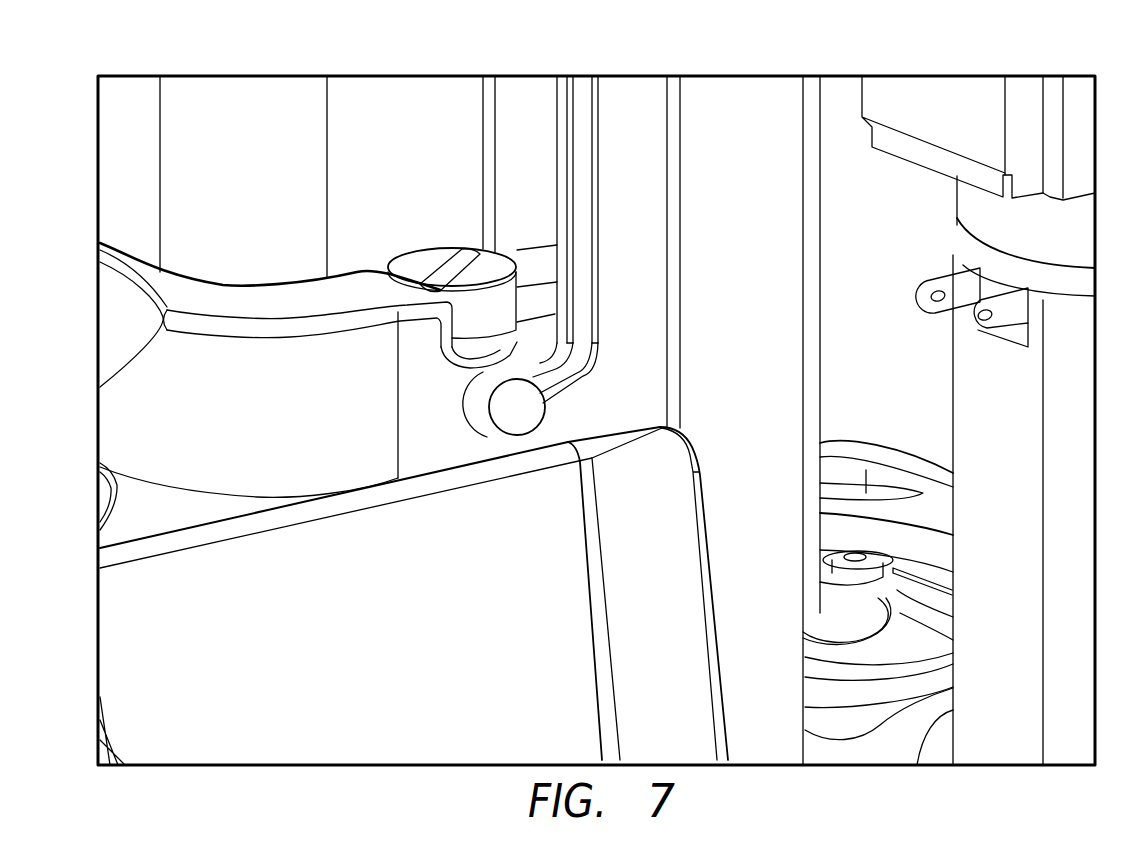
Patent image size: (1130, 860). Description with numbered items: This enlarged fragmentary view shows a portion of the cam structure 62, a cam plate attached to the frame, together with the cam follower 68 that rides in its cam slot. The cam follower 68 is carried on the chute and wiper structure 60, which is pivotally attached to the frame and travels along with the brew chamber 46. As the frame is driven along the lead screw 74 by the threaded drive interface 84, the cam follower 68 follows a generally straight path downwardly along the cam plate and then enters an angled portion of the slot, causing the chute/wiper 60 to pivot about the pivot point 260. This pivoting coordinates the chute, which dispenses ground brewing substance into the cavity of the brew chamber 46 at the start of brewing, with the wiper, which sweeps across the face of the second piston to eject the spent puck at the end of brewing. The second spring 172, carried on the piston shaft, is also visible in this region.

The brew chamber 46 is at (318, 698).
The chute and wiper structure 60 is at (147, 427).
The cam structure 62 is at (755, 112).
The cam follower 68 is at (538, 267).
The lead screw 74 is at (812, 330).
The drive interface 84 is at (848, 590).
The second spring 172 is at (530, 127).
The pivot point 260 is at (435, 258).